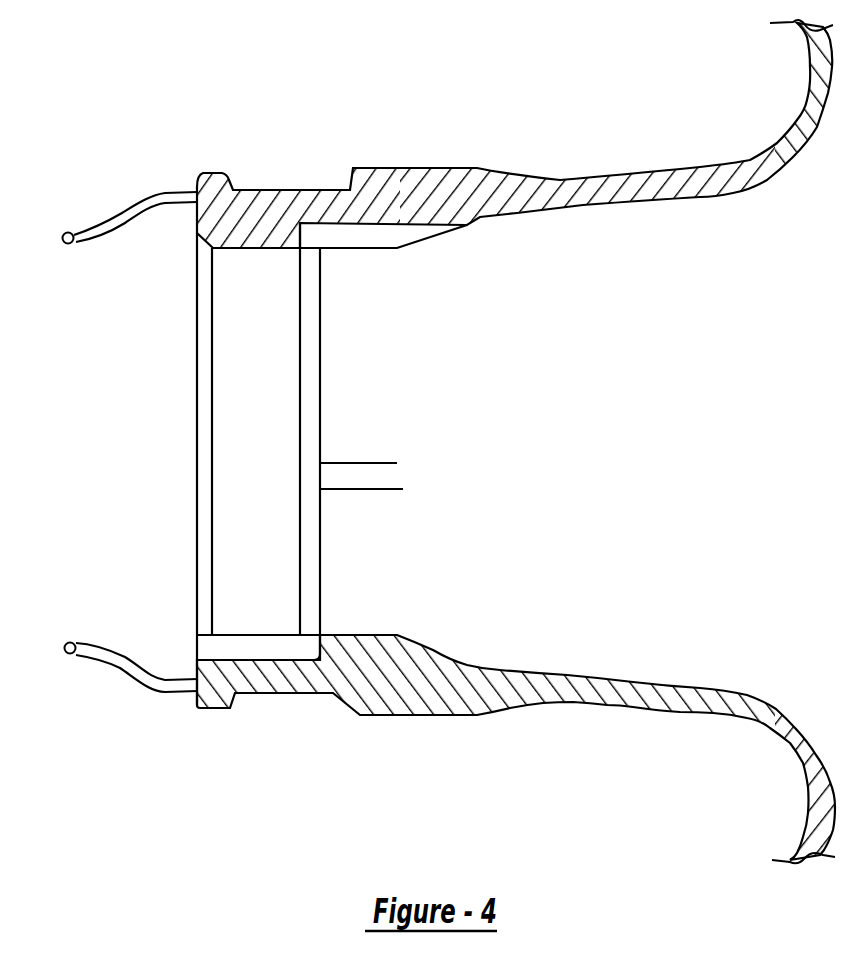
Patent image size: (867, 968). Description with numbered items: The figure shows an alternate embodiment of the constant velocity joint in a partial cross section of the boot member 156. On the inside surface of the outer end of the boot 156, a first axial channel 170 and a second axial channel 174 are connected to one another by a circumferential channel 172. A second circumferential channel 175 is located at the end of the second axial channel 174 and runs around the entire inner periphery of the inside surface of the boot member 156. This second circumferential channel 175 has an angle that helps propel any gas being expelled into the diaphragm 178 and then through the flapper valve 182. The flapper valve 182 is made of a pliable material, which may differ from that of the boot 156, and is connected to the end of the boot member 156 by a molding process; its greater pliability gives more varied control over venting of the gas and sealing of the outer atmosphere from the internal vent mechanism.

The boot member 156 is at (800, 118).
The first axial channel 170 is at (375, 237).
The circumferential channel 172 is at (308, 397).
The second axial channel 174 is at (263, 643).
The second circumferential channel 175 is at (205, 410).
The diaphragm 178 is at (150, 230).
The flapper valve 182 is at (63, 229).